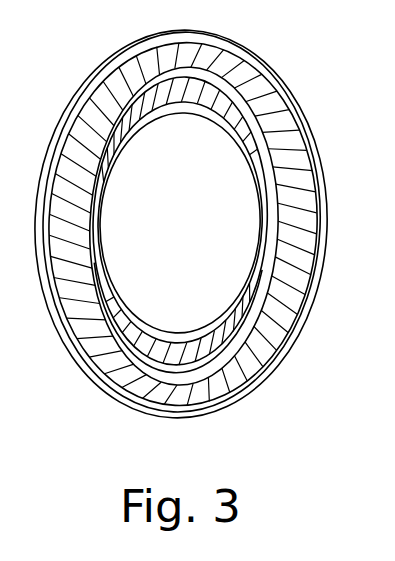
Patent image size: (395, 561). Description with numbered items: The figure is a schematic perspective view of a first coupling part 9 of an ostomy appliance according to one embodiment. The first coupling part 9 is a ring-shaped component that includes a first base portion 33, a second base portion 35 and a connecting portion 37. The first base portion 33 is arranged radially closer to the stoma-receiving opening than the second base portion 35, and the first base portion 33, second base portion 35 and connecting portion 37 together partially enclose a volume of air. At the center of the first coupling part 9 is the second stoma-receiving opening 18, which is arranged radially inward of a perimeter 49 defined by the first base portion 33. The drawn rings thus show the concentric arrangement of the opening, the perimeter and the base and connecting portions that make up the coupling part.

The first coupling part 9 is at (108, 406).
The second base portion 35 is at (193, 407).
The perimeter 49 is at (97, 221).
The connecting portion 37 is at (82, 172).
The first base portion 33 is at (140, 328).
The second stoma-receiving opening 18 is at (240, 266).